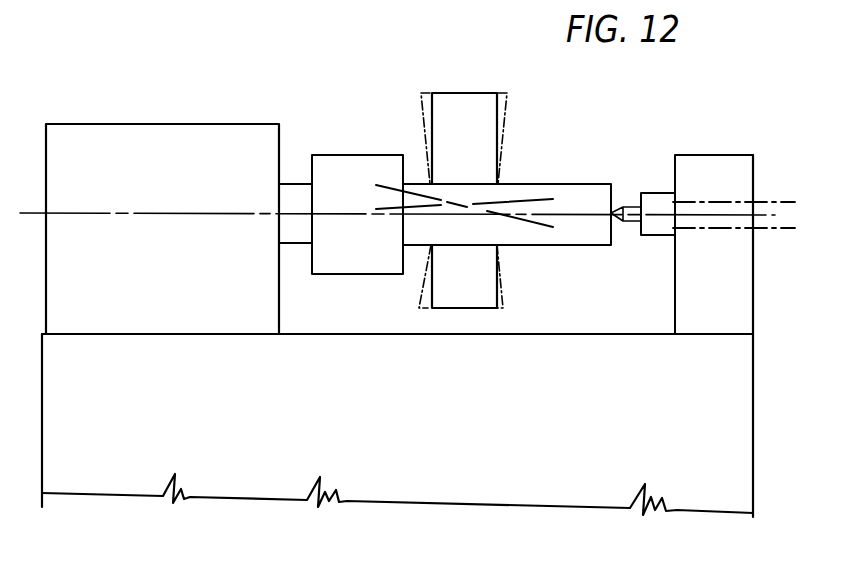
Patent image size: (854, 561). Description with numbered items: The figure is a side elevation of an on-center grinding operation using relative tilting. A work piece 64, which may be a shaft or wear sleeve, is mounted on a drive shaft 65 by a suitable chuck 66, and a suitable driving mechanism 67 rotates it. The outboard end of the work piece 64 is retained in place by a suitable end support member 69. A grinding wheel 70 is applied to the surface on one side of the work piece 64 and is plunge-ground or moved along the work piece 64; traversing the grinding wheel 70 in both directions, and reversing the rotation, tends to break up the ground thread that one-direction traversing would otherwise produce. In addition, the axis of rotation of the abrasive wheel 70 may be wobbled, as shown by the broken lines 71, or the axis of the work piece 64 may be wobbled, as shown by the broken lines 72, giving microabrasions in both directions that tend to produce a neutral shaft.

The work piece 64 is at (555, 192).
The drive shaft 65 is at (293, 190).
The chuck 66 is at (387, 268).
The driving mechanism 67 is at (176, 166).
The end support member 69 is at (617, 207).
The grinding wheel 70 is at (473, 93).
The broken lines 71 is at (421, 101).
The broken lines 72 is at (508, 205).